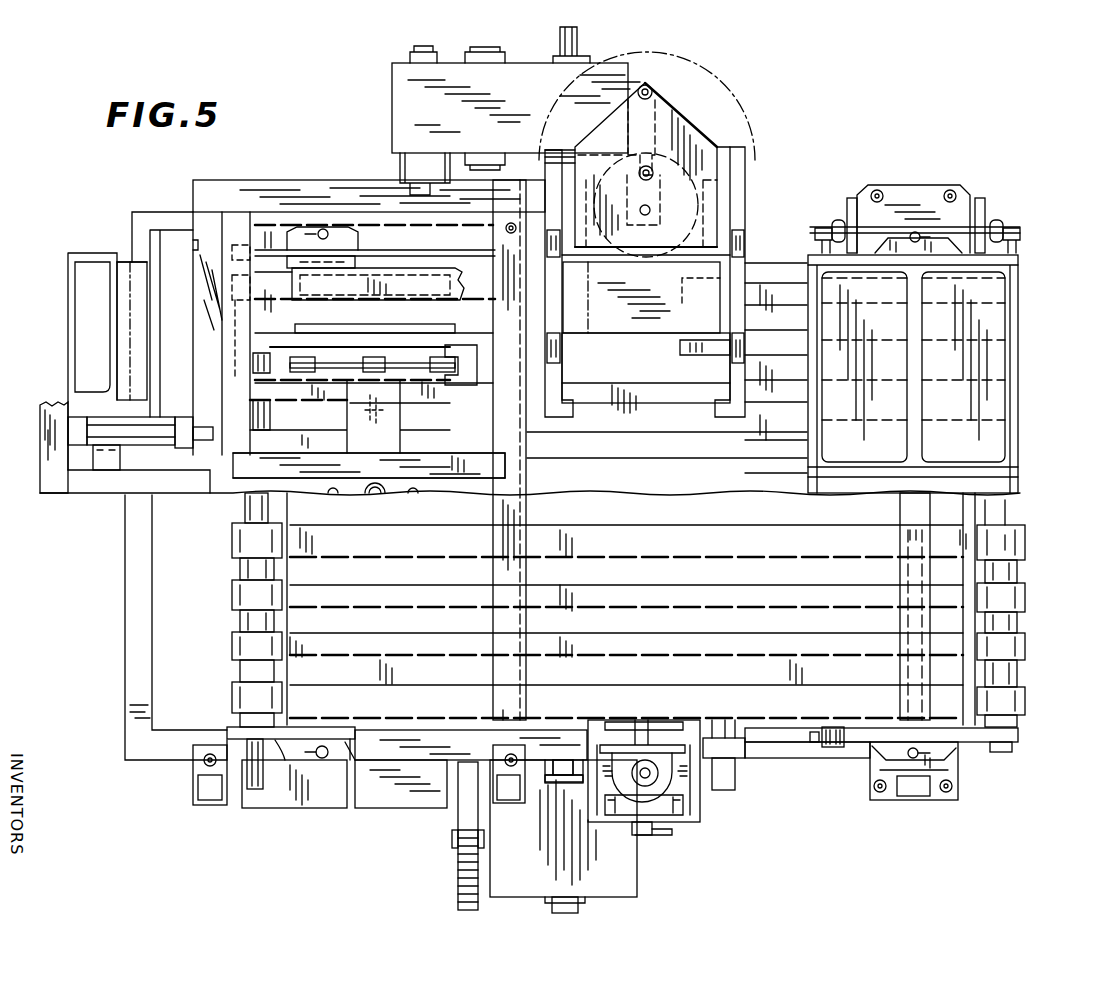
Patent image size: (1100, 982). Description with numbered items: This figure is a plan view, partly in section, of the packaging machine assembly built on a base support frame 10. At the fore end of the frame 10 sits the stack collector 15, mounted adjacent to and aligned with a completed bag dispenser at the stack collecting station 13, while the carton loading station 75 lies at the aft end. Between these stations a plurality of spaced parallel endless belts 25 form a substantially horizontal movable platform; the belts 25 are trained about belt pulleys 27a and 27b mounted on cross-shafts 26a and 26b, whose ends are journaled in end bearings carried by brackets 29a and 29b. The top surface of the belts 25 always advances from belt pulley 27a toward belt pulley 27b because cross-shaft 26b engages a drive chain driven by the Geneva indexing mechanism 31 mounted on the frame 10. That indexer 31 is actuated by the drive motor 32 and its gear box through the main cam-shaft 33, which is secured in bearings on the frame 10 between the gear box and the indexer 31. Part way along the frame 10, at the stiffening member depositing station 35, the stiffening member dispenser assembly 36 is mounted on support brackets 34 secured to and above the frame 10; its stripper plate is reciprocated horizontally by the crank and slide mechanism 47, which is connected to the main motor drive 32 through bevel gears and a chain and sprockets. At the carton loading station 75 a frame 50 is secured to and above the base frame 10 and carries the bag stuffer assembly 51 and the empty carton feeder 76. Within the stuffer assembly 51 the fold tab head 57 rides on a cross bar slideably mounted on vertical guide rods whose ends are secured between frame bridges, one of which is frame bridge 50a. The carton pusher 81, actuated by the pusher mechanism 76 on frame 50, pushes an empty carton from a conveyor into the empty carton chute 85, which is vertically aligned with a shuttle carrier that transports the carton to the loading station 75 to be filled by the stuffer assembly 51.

The base support frame 10 is at (127, 708).
The stack collecting station 13 is at (1005, 196).
The stack collector 15 is at (1002, 322).
The endless belts 25 is at (237, 538).
The cross-shaft 26a is at (1016, 572).
The cross-shaft 26b is at (246, 622).
The belt pulley 27a is at (1013, 625).
The belt pulley 27b is at (240, 566).
The bracket 29a is at (968, 738).
The bracket 29b is at (275, 740).
The Geneva indexing mechanism 31 is at (658, 76).
The drive motor 32 is at (366, 810).
The main cam-shaft 33 is at (557, 40).
The support brackets 34 is at (748, 147).
The stiffening member depositing station 35 is at (777, 200).
The stiffening member dispenser assembly 36 is at (659, 378).
The crank and slide mechanism 47 is at (735, 104).
The frame 50 is at (302, 185).
The frame bridge 50a is at (500, 460).
The bag stuffer assembly 51 is at (424, 333).
The fold tab head 57 is at (397, 424).
The carton loading station 75 is at (350, 170).
The empty carton feeder 76 is at (96, 246).
The carton pusher 81 is at (80, 362).
The empty carton chute 85 is at (186, 370).